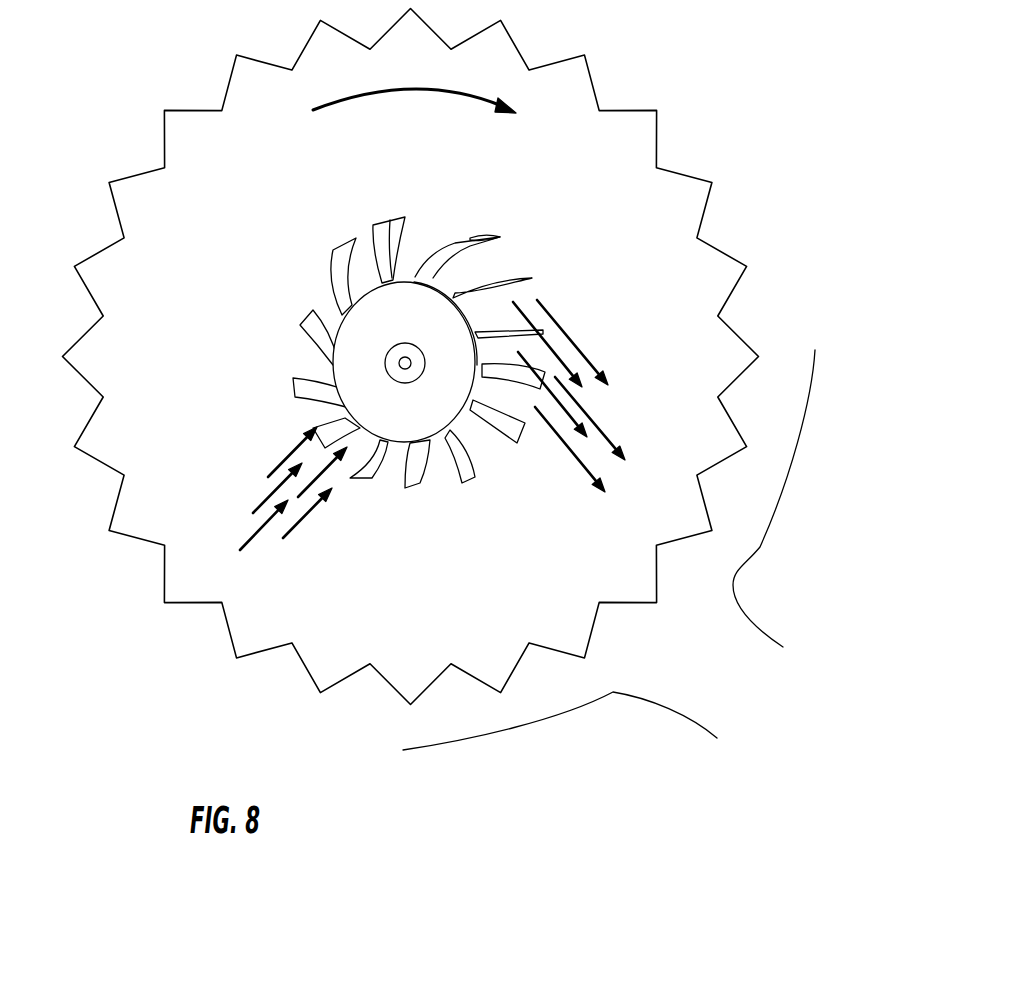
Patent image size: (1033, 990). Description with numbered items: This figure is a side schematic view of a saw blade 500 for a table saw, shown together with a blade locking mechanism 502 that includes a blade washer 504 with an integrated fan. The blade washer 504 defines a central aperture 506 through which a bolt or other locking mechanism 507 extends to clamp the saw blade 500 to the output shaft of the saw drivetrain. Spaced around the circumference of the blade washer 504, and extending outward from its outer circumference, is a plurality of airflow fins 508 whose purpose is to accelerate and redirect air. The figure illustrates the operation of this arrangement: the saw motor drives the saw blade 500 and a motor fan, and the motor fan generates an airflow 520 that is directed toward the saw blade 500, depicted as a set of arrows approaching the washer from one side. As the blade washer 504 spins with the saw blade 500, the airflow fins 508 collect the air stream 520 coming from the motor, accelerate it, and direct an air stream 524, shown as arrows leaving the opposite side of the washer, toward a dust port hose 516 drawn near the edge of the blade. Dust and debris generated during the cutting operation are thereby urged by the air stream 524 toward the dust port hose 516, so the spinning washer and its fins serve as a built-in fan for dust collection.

The saw blade 500 is at (616, 155).
The blade locking mechanism 502 is at (359, 339).
The blade washer 504 is at (370, 333).
The central aperture 506 is at (380, 391).
The bolt or other locking mechanism 507 is at (412, 354).
The airflow fins 508 is at (515, 277).
The dust port hose 516 is at (753, 653).
The airflow 520 is at (297, 527).
The air stream 524 is at (587, 347).